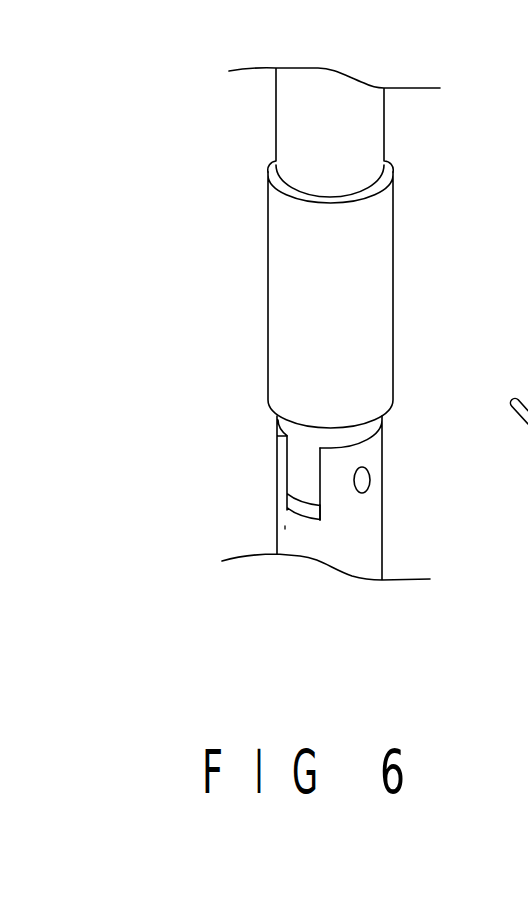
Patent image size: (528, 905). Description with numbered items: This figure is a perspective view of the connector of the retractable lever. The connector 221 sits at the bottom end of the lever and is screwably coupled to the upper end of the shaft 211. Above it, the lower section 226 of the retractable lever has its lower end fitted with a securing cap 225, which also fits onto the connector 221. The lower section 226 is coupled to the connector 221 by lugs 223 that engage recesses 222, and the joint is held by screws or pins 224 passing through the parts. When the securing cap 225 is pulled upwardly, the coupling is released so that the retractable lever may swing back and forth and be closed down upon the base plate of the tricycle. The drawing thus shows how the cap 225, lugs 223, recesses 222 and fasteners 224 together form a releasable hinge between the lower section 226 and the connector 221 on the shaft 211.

The lower section 226 is at (378, 142).
The securing cap 225 is at (268, 357).
The connector 221 is at (377, 538).
The recess 222 is at (300, 510).
The lug 223 is at (318, 520).
The screw 224 is at (370, 476).
The shaft 211 is at (288, 533).